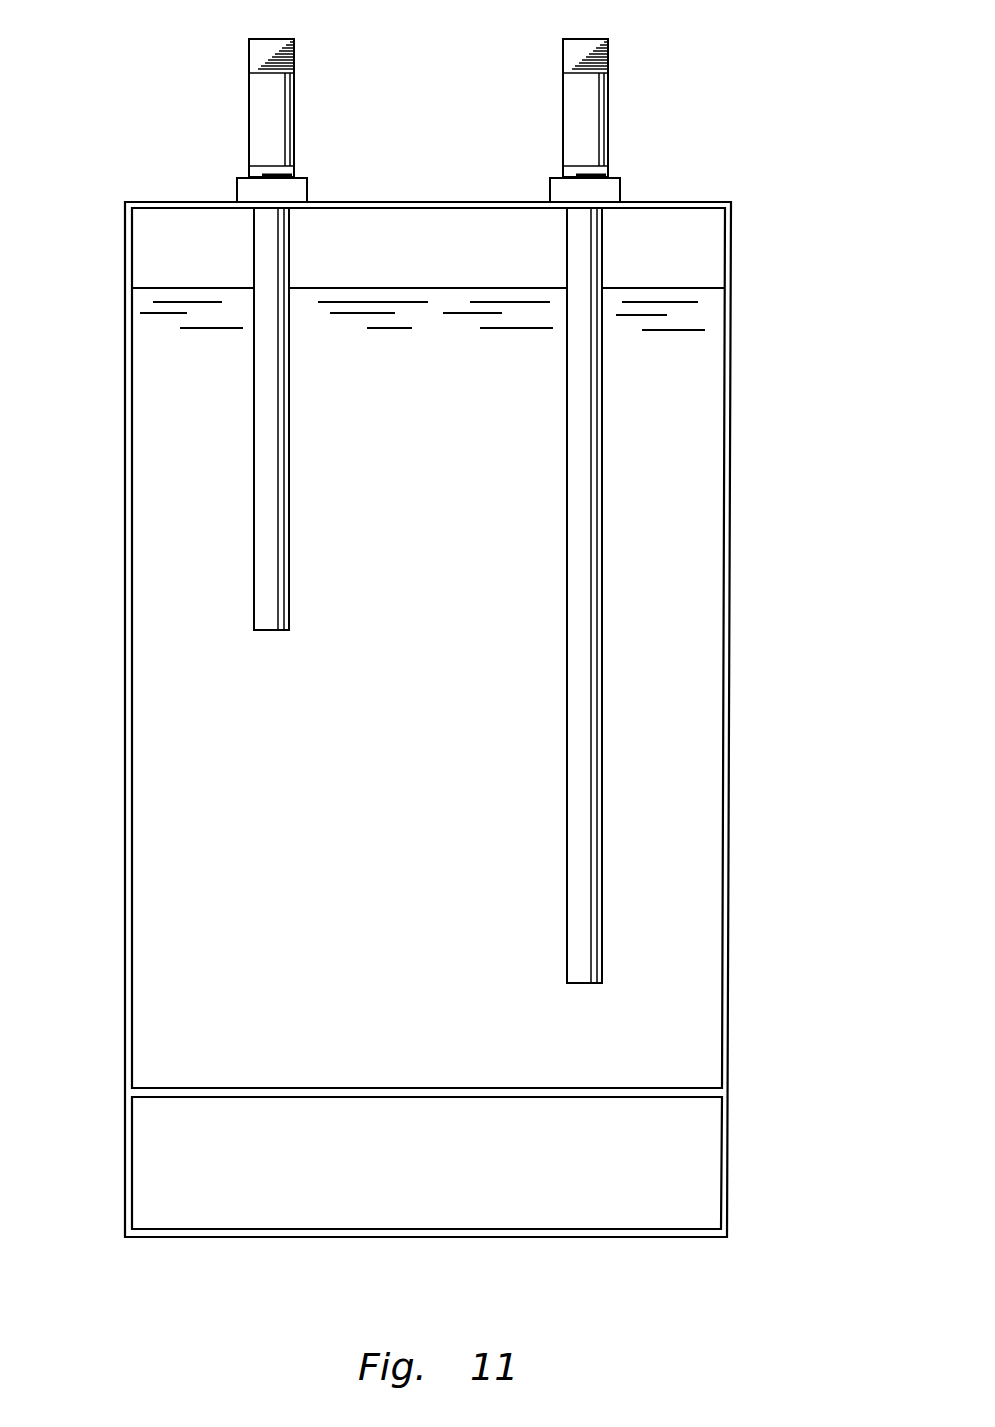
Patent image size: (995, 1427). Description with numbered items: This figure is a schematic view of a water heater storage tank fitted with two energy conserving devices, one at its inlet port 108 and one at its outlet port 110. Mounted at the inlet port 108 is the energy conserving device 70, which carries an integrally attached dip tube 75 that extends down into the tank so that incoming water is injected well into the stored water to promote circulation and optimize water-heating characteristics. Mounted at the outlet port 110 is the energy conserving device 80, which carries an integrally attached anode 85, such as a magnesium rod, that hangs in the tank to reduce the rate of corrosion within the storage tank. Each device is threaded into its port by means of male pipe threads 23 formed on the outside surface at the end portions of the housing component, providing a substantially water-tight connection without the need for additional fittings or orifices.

The male pipe threads 23 is at (249, 168).
The energy conserving device 70 is at (608, 104).
The energy conserving device 80 is at (294, 114).
The dip tube 75 is at (602, 590).
The anode 85 is at (253, 537).
The inlet port 108 is at (620, 194).
The outlet port 110 is at (237, 190).